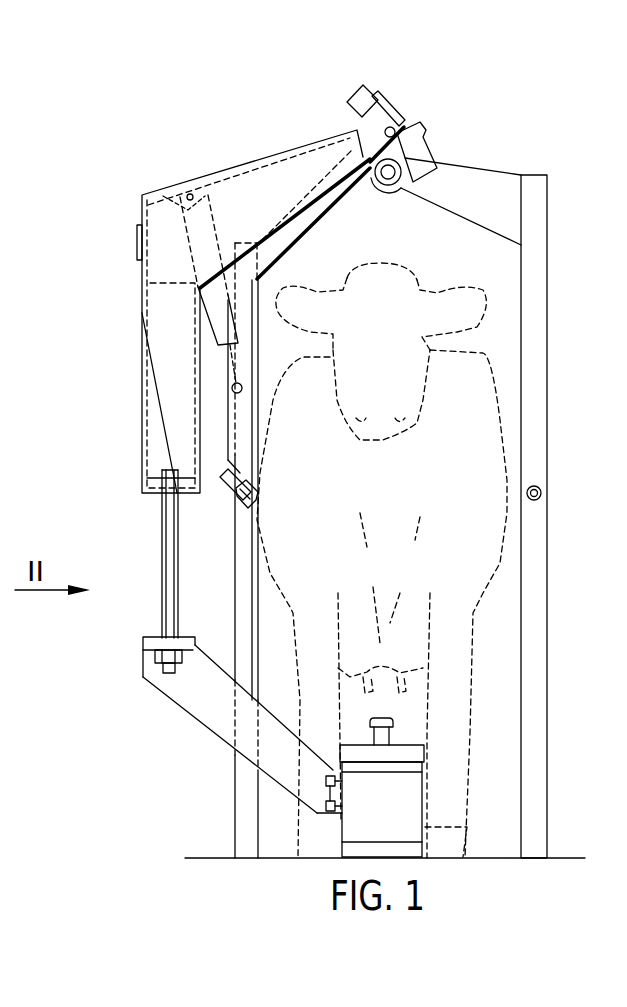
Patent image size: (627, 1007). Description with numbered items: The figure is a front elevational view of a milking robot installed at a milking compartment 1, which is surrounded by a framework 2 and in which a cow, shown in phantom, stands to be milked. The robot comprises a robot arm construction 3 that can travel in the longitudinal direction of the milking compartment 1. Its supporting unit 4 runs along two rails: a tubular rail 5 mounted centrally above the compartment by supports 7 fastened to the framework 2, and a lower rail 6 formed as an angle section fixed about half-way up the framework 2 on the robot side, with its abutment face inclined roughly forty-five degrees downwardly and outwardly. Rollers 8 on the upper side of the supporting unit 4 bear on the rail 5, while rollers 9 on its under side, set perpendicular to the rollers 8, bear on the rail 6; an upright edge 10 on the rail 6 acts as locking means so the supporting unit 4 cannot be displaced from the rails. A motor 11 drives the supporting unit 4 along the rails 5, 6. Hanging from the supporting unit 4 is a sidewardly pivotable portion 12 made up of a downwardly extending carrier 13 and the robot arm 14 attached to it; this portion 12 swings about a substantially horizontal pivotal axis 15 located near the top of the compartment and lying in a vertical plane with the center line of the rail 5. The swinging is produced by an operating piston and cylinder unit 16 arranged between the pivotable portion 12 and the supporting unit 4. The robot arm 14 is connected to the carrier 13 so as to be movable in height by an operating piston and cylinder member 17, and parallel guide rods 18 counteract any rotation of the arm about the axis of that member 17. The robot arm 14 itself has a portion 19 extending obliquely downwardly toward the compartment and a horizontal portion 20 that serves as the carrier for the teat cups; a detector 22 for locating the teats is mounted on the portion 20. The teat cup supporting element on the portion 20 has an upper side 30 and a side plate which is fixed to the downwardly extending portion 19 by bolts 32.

The milking compartment 1 is at (495, 785).
The framework 2 is at (538, 463).
The robot arm construction 3 is at (208, 611).
The supporting unit 4 is at (250, 438).
The rail 5 is at (402, 184).
The rail 6 is at (258, 512).
The supports 7 is at (478, 212).
The rollers 8 is at (427, 140).
The rollers 9 is at (240, 490).
The upright edge 10 is at (250, 485).
The motor 11 is at (347, 103).
The sidewardly pivotable portion 12 is at (140, 380).
The carrier 13 is at (158, 267).
The robot arm 14 is at (270, 700).
The pivotal axis 15 is at (396, 128).
The operating piston and cylinder unit 16 is at (203, 227).
The operating piston and cylinder member 17 is at (160, 528).
The guide rods 18 is at (167, 618).
The portion 19 is at (185, 703).
The portion 20 is at (410, 817).
The detector 22 is at (380, 753).
The upper side 30 is at (413, 753).
The bolts 32 is at (328, 785).